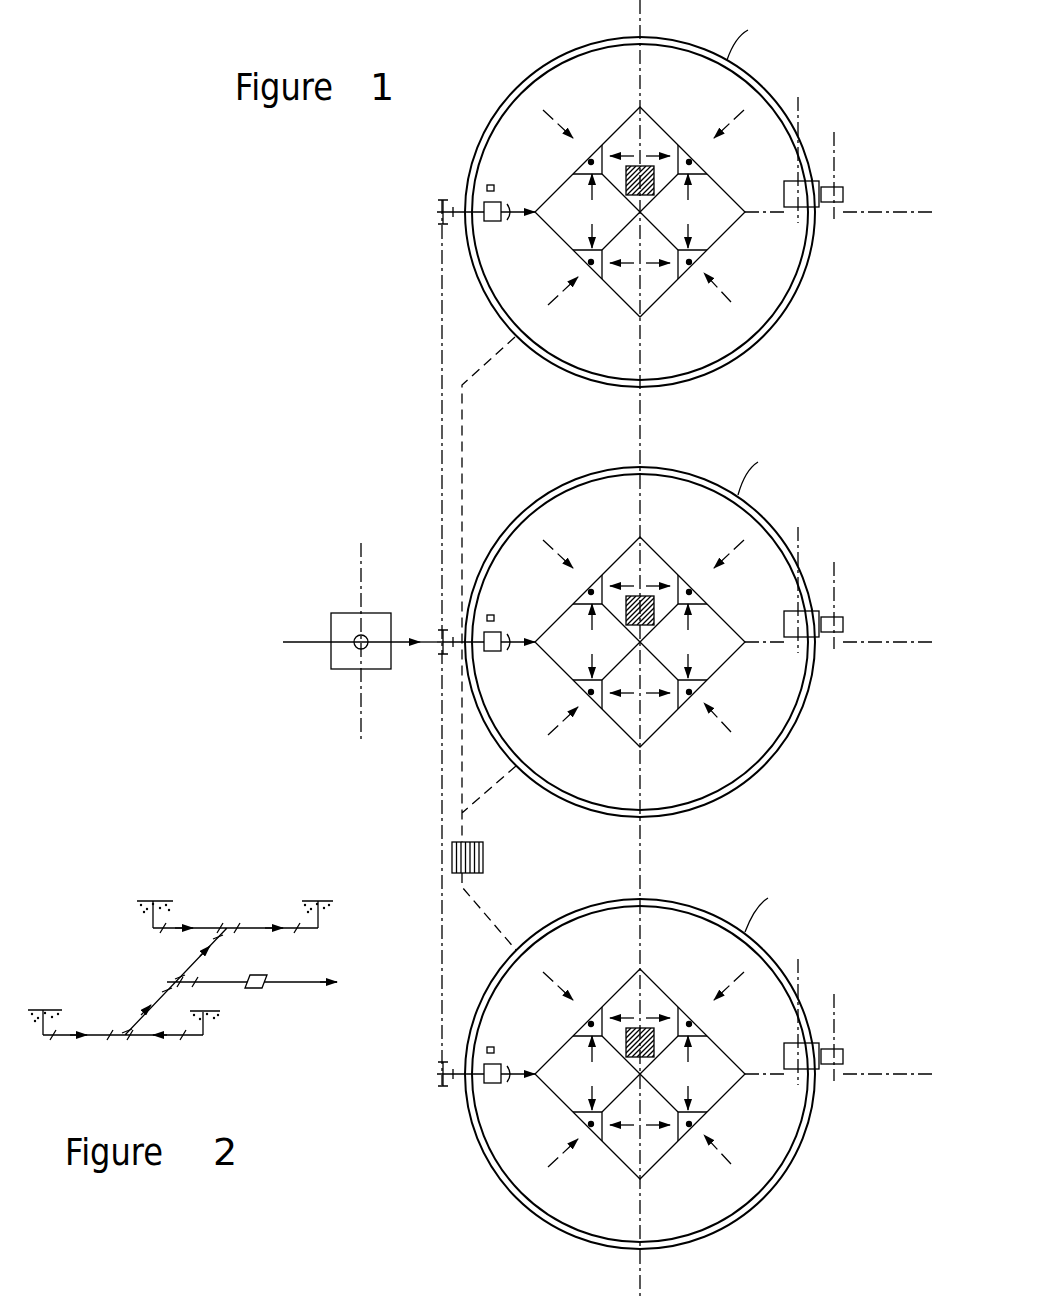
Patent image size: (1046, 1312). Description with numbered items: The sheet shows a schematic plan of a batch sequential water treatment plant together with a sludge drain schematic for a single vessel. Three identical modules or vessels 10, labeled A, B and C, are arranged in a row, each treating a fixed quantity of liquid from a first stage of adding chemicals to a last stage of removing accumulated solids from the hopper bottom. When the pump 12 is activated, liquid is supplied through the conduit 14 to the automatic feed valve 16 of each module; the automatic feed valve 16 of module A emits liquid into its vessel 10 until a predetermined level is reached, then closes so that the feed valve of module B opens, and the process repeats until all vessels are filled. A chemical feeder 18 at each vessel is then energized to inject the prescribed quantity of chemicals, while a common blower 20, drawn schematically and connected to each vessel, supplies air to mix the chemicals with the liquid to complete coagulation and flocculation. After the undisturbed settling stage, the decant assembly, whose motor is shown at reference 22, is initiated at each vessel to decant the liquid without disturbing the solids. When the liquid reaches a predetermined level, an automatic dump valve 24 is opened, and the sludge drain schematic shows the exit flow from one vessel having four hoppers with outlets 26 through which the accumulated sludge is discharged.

In FIG. 1, the vessel 10 is at (686, 626).
In FIG. 1, the pump 12 is at (340, 618).
In FIG. 1, the conduit 14 is at (442, 422).
In FIG. 1, the automatic feed valve 16 is at (510, 659).
In FIG. 1, the chemical feeder 18 is at (652, 567).
In FIG. 1, the blower 20 is at (483, 860).
In FIG. 1, the decant assembly motor 22 is at (843, 604).
In FIG. 2, the automatic dump valve 24 is at (265, 975).
In FIG. 1, the outlet 26 is at (665, 1071).
In FIG. 2, the outlet 26 is at (154, 899).